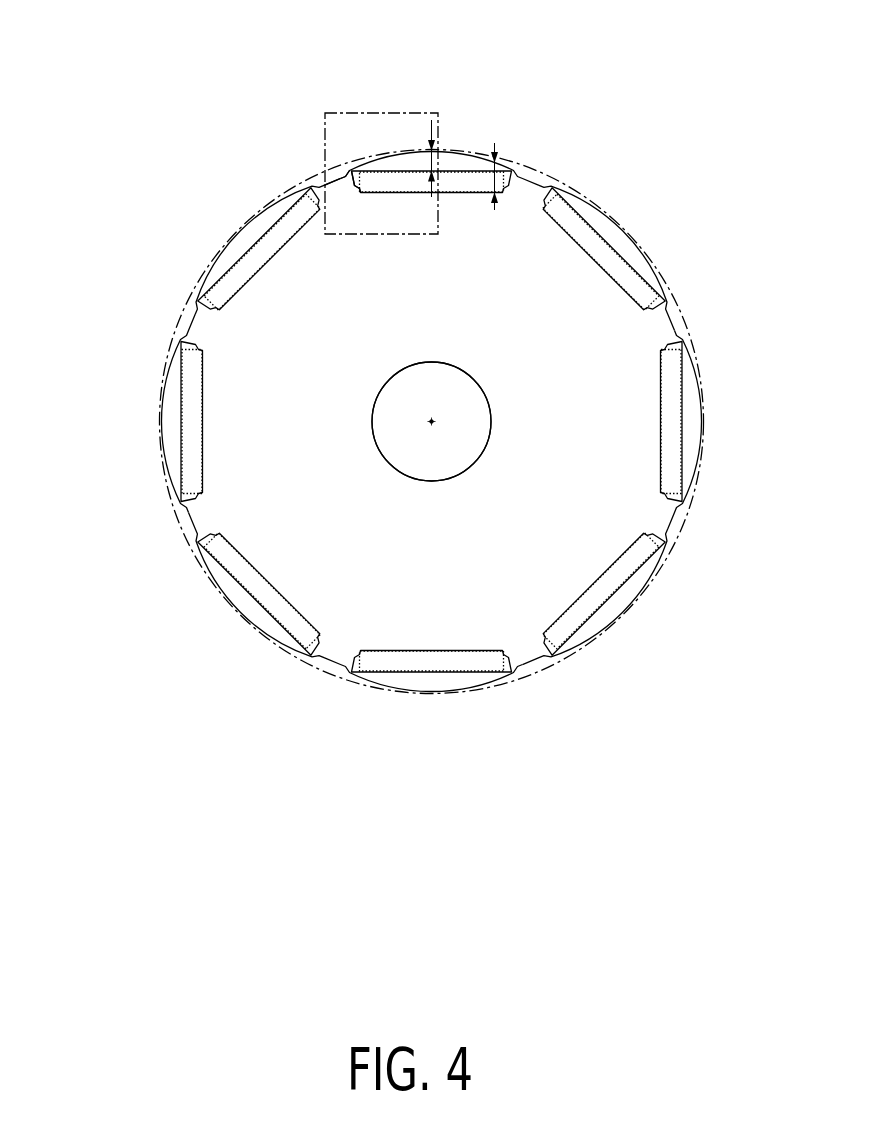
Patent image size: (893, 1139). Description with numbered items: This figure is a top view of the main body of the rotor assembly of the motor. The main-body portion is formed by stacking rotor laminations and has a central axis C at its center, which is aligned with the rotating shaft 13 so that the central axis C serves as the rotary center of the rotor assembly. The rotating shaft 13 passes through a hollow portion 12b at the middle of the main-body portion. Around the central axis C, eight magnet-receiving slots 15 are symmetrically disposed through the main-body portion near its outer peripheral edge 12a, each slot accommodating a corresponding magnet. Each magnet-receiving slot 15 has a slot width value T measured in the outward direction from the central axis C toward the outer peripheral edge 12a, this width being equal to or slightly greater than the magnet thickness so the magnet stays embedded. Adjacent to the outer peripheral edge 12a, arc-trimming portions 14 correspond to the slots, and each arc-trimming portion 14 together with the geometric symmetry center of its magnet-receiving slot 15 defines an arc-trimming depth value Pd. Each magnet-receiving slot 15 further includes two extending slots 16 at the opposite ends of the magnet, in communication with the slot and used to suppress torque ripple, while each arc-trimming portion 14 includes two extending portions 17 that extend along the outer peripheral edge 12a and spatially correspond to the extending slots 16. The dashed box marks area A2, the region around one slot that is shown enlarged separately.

The outer peripheral edge 12a is at (412, 422).
The hollow portion 12b is at (460, 421).
The rotating shaft 13 is at (536, 349).
The arc-trimming portion 14 is at (432, 124).
The magnet-receiving slot 15 is at (419, 130).
The extending slot 16 is at (297, 141).
The extending portion 17 is at (324, 138).
The central axis C is at (604, 417).
The slot width value T is at (497, 150).
The arc-trimming depth value Pd is at (434, 150).
The area A2 is at (421, 112).